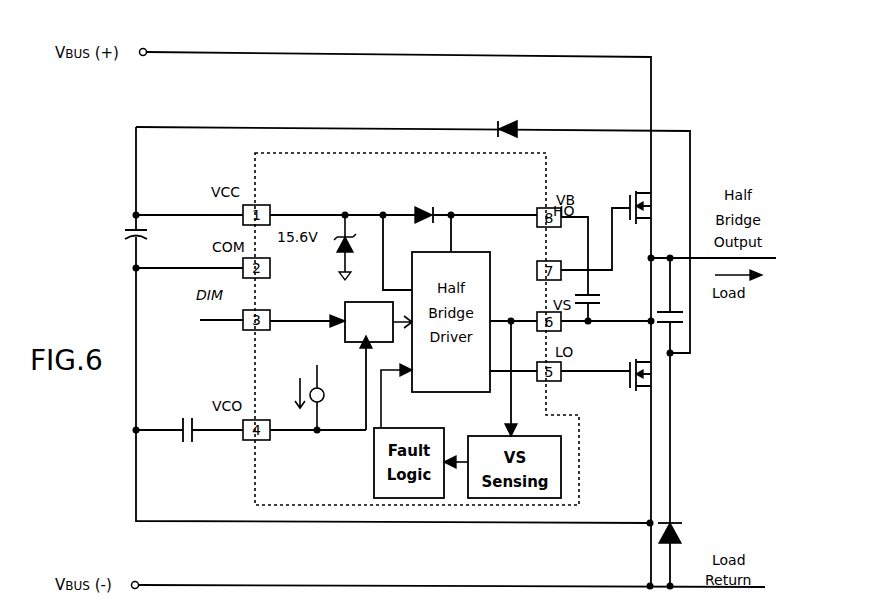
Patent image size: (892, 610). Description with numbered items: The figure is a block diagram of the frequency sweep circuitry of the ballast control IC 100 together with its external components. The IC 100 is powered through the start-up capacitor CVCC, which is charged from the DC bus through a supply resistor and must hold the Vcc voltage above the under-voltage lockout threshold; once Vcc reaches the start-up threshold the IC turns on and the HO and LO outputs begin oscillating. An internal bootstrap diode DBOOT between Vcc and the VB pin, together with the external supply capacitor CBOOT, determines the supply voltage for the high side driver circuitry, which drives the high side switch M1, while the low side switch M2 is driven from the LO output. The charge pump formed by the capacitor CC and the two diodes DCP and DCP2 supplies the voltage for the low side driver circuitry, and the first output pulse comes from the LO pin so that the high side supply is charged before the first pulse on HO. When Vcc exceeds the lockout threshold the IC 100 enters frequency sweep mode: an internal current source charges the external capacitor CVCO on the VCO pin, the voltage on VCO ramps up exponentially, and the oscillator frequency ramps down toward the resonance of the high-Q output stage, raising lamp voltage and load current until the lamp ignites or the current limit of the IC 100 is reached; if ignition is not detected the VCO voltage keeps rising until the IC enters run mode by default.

The ballast control IC 100 is at (343, 151).
The high side switch transistor M1 is at (627, 205).
The low side switch transistor M2 is at (627, 368).
The charge pump diode DCP is at (507, 112).
The charge pump diode DCP2 is at (692, 536).
The bootstrap diode DBOOT is at (418, 202).
The bootstrap supply capacitor CBOOT is at (607, 294).
The start-up capacitor CVCC is at (158, 236).
The VCO capacitor CVCO is at (178, 443).
The charge pump capacitor CC is at (688, 422).
The VCO pin VCO is at (369, 322).